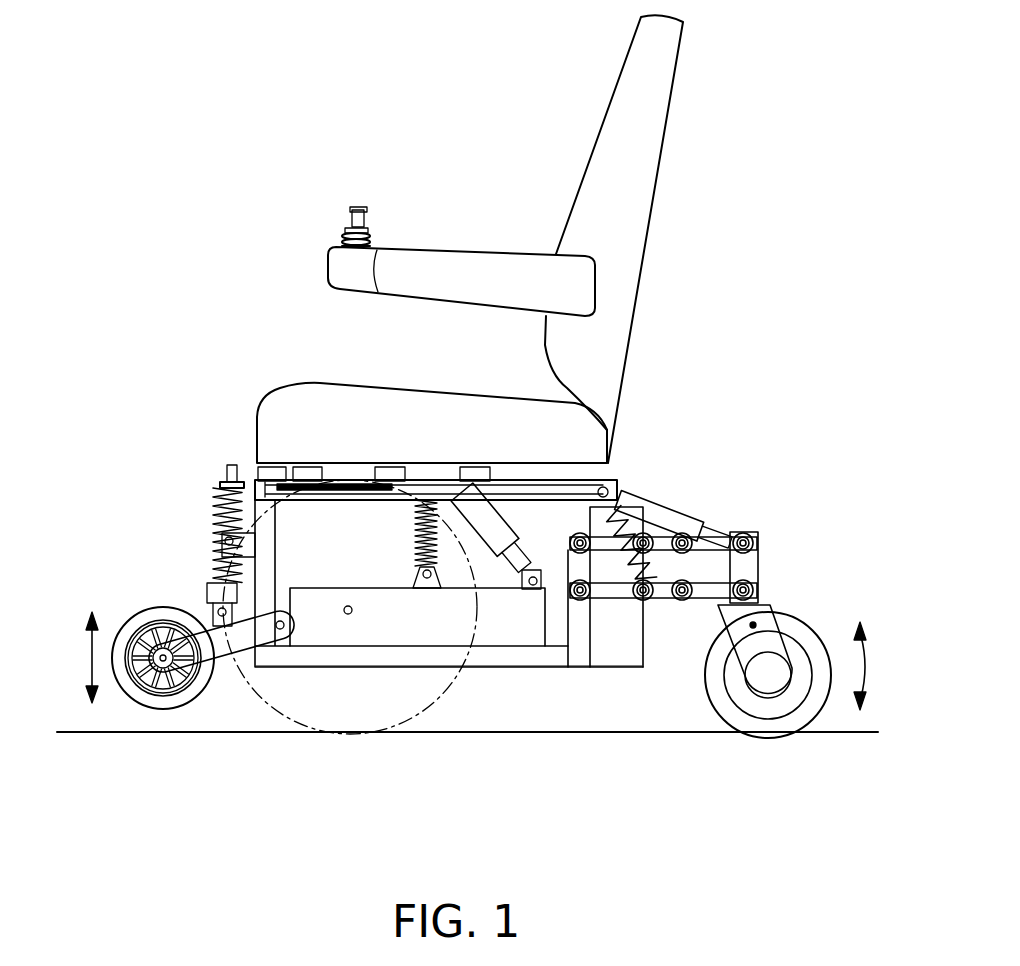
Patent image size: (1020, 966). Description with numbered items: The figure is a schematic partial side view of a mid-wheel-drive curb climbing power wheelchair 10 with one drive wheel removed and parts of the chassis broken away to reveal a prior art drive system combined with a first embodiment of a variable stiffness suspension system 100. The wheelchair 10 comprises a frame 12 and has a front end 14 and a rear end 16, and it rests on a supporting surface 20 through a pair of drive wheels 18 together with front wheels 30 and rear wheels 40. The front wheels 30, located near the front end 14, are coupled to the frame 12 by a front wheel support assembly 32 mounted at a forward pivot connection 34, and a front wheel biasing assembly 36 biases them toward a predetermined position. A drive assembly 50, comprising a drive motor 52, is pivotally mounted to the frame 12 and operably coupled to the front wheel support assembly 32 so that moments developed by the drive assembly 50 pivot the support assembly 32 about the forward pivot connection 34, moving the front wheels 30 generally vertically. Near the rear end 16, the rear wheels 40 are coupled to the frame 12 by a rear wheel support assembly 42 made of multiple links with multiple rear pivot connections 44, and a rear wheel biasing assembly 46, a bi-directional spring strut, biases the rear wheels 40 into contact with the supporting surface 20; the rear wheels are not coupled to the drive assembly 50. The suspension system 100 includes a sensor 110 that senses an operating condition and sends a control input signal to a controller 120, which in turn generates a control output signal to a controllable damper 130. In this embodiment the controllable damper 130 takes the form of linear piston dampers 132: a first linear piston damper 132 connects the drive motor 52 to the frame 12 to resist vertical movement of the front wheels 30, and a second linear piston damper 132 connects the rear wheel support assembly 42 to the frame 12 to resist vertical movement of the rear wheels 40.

The power wheelchair 10 is at (367, 143).
The variable stiffness suspension system 100 is at (277, 366).
The controller 120 is at (268, 474).
The sensor 110 is at (387, 473).
The controllable damper 130 is at (517, 500).
The linear piston damper 132 is at (666, 500).
The frame 12 is at (263, 508).
The drive wheels 18 is at (457, 678).
The drive assembly 50 is at (400, 680).
The drive motor 52 is at (513, 625).
The front wheel biasing assembly 36 is at (213, 520).
The front end 14 is at (187, 547).
The front wheel support assembly 32 is at (236, 670).
The forward pivot connection 34 is at (279, 625).
The front wheels 30 is at (183, 710).
The supporting surface 20 is at (66, 732).
The rear pivot connections 44 is at (577, 583).
The rear wheel support assembly 42 is at (668, 618).
The rear wheel biasing assembly 46 is at (617, 533).
The rear end 16 is at (833, 603).
The rear wheels 40 is at (708, 737).